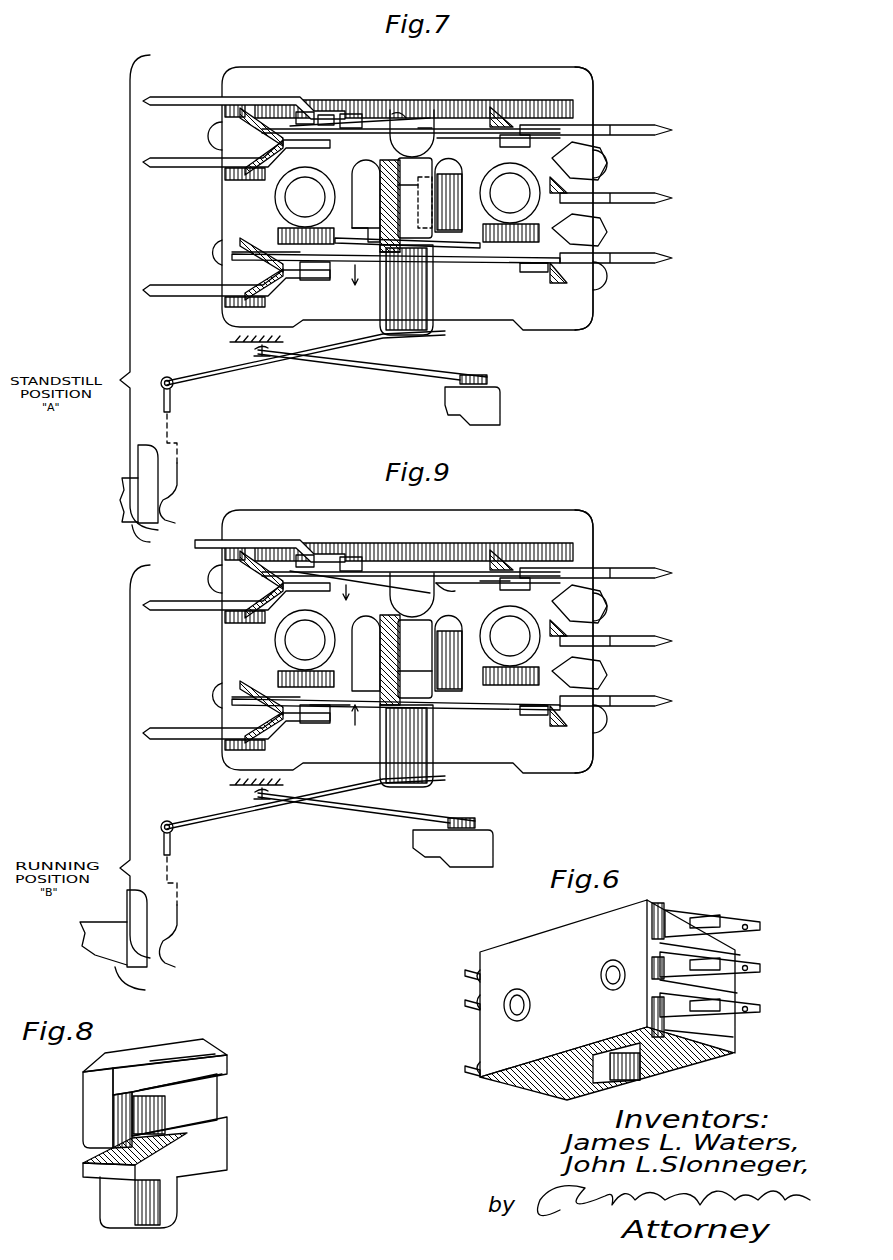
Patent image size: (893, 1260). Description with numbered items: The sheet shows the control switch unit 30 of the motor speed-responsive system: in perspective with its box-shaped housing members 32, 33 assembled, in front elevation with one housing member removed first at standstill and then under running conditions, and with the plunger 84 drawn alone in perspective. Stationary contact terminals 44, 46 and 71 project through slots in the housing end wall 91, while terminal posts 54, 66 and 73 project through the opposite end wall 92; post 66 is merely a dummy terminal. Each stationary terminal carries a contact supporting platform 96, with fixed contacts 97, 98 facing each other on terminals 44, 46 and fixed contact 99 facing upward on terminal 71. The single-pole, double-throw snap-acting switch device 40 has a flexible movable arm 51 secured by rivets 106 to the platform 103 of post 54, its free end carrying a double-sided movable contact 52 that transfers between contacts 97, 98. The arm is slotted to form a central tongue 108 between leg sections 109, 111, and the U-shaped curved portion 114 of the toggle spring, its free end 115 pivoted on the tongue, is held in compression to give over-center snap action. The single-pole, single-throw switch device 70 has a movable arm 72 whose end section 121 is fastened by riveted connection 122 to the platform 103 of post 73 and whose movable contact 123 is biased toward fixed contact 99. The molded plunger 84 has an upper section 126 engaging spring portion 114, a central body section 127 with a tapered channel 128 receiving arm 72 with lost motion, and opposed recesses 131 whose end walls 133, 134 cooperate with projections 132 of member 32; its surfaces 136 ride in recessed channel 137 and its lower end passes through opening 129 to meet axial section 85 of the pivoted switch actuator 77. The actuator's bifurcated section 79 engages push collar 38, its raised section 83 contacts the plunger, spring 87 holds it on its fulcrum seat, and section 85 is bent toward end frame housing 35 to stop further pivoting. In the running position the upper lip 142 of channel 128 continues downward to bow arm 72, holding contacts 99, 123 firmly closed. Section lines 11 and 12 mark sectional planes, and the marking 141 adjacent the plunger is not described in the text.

In FIG. 9, the section line 11- 11 is at (436, 539).
In FIG. 9, the section line 12- 12 is at (436, 670).
In FIG. 7, the switch unit 30 is at (560, 347).
In FIG. 6, the switch unit 30 is at (785, 1038).
In FIG. 7, the housing member 32 is at (540, 67).
In FIG. 9, the housing member 32 is at (414, 519).
In FIG. 6, the housing member 32 is at (690, 1060).
In FIG. 6, the housing member 33 is at (537, 943).
In FIG. 7, the end frame housing 35 is at (500, 405).
In FIG. 9, the end frame housing 35 is at (434, 848).
In FIG. 7, the push collar 38 is at (132, 492).
In FIG. 9, the push collar 38 is at (91, 940).
In FIG. 7, the switch device 40 is at (459, 148).
In FIG. 7, the stationary contact terminal 44 is at (305, 97).
In FIG. 9, the stationary contact terminal 44 is at (270, 551).
In FIG. 6, the stationary contact terminal 44 is at (465, 973).
In FIG. 7, the stationary contact terminal 46 is at (262, 168).
In FIG. 9, the stationary contact terminal 46 is at (236, 584).
In FIG. 6, the stationary contact terminal 46 is at (465, 1003).
In FIG. 7, the movable arm 51 is at (440, 122).
In FIG. 9, the movable arm 51 is at (411, 545).
In FIG. 7, the movable contact 52 is at (330, 125).
In FIG. 9, the movable contact 52 is at (425, 553).
In FIG. 7, the terminal post 54 is at (625, 125).
In FIG. 9, the terminal post 54 is at (596, 554).
In FIG. 6, the terminal post 54 is at (748, 922).
In FIG. 7, the terminal post 66 is at (605, 195).
In FIG. 9, the terminal post 66 is at (616, 623).
In FIG. 6, the terminal post 66 is at (750, 965).
In FIG. 7, the switch device 70 is at (480, 276).
In FIG. 9, the switch device 70 is at (396, 704).
In FIG. 7, the stationary contact terminal 71 is at (265, 297).
In FIG. 9, the stationary contact terminal 71 is at (236, 712).
In FIG. 6, the stationary contact terminal 71 is at (468, 1070).
In FIG. 9, the movable arm 72 is at (344, 744).
In FIG. 7, the terminal post 73 is at (600, 262).
In FIG. 9, the terminal post 73 is at (616, 717).
In FIG. 6, the terminal post 73 is at (755, 1008).
In FIG. 7, the switch actuator 77 is at (252, 373).
In FIG. 9, the switch actuator 77 is at (211, 860).
In FIG. 7, the bifurcated section 79 is at (165, 503).
In FIG. 9, the bifurcated section 79 is at (187, 936).
In FIG. 7, the raised section 83 is at (405, 343).
In FIG. 9, the raised section 83 is at (324, 802).
In FIG. 7, the plunger 84 is at (433, 320).
In FIG. 9, the plunger 84 is at (440, 746).
In FIG. 6, the plunger 84 is at (613, 1082).
In FIG. 8, the plunger 84 is at (178, 1196).
In FIG. 7, the axial section 85 is at (490, 379).
In FIG. 9, the axial section 85 is at (396, 810).
In FIG. 7, the spring 87 is at (254, 349).
In FIG. 9, the spring 87 is at (244, 791).
In FIG. 7, the housing end wall 91 is at (222, 218).
In FIG. 9, the housing end wall 91 is at (385, 641).
In FIG. 6, the housing end wall 91 is at (478, 1030).
In FIG. 7, the housing end wall 92 is at (594, 100).
In FIG. 9, the housing end wall 92 is at (611, 641).
In FIG. 6, the housing end wall 92 is at (740, 985).
In FIG. 7, the contact supporting platform 96 is at (326, 115).
In FIG. 7, the fixed contact 97 is at (305, 112).
In FIG. 9, the fixed contact 97 is at (302, 524).
In FIG. 7, the fixed contact 98 is at (300, 150).
In FIG. 9, the fixed contact 98 is at (401, 640).
In FIG. 7, the fixed contact 99 is at (318, 281).
In FIG. 9, the fixed contact 99 is at (302, 735).
In FIG. 7, the platform 103 is at (513, 115).
In FIG. 9, the platform 103 is at (571, 606).
In FIG. 7, the rivets 106 is at (532, 142).
In FIG. 9, the rivets 106 is at (546, 592).
In FIG. 7, the central tongue 108 is at (355, 114).
In FIG. 9, the central tongue 108 is at (364, 599).
In FIG. 9, the leg section 109 is at (461, 593).
In FIG. 9, the leg section 111 is at (503, 592).
In FIG. 7, the curved portion 114 is at (425, 128).
In FIG. 7, the free end 115 is at (398, 112).
In FIG. 7, the end section 121 is at (543, 268).
In FIG. 9, the end section 121 is at (530, 731).
In FIG. 7, the riveted connection 122 is at (530, 270).
In FIG. 9, the riveted connection 122 is at (548, 749).
In FIG. 7, the movable contact 123 is at (253, 258).
In FIG. 9, the movable contact 123 is at (266, 670).
In FIG. 7, the upper section 126 is at (434, 198).
In FIG. 9, the upper section 126 is at (422, 657).
In FIG. 8, the upper section 126 is at (178, 1048).
In FIG. 8, the central body section 127 is at (118, 1115).
In FIG. 7, the tapered channel 128 is at (440, 246).
In FIG. 9, the tapered channel 128 is at (412, 675).
In FIG. 8, the tapered channel 128 is at (105, 1162).
In FIG. 6, the opening 129 is at (645, 1075).
In FIG. 7, the recesses 131 is at (384, 196).
In FIG. 9, the recesses 131 is at (390, 660).
In FIG. 8, the recesses 131 is at (200, 1096).
In FIG. 7, the projections 132 is at (373, 218).
In FIG. 7, the end wall 133 is at (368, 162).
In FIG. 9, the end wall 133 is at (361, 638).
In FIG. 8, the end wall 133 is at (212, 1078).
In FIG. 7, the end wall 134 is at (377, 228).
In FIG. 8, the end wall 134 is at (207, 1121).
In FIG. 8, the plunger surfaces 136 is at (215, 1062).
In FIG. 7, the recessed channel 137 is at (412, 108).
In FIG. 9, the recessed channel 137 is at (412, 595).
In FIG. 7, the plunger stem 141 is at (378, 272).
In FIG. 9, the plunger stem 141 is at (358, 746).
In FIG. 9, the upper lip 142 is at (335, 689).